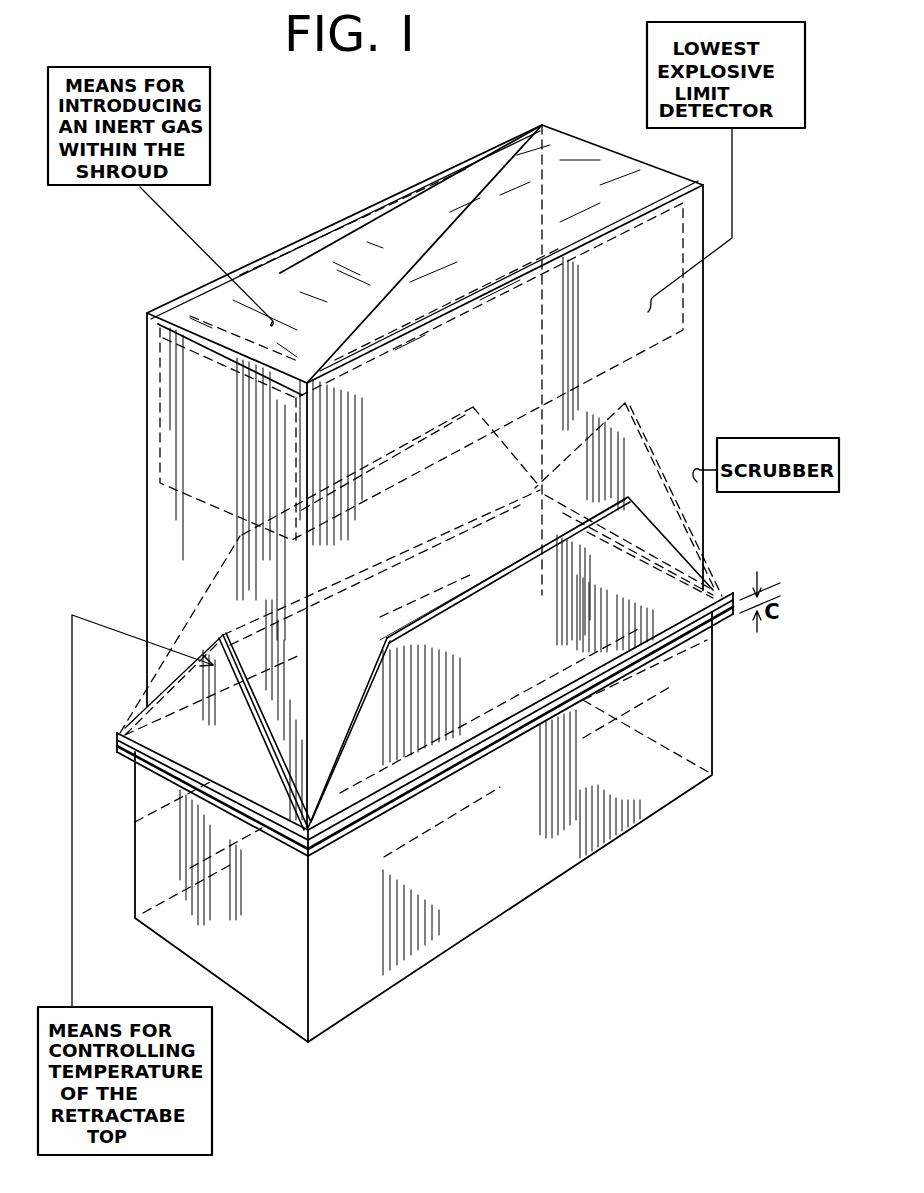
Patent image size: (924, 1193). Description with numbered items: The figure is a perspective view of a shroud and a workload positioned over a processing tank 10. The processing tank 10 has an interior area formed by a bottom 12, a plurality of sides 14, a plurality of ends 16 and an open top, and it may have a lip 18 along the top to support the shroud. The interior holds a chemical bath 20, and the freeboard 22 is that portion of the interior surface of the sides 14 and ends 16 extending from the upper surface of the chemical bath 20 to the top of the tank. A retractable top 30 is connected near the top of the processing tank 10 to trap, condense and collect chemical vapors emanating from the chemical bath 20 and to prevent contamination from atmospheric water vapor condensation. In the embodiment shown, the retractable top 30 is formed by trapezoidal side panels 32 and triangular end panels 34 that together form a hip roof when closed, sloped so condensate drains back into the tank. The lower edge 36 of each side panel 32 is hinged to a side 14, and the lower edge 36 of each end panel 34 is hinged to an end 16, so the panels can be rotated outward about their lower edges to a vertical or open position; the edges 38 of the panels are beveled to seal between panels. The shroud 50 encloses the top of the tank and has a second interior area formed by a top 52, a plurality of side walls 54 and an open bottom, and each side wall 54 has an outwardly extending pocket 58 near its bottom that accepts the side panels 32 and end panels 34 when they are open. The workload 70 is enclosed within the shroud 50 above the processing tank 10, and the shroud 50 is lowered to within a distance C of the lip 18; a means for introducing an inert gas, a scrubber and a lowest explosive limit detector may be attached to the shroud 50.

The processing tank 10 is at (177, 938).
The bottom 12 is at (460, 943).
The sides 14 is at (497, 878).
The ends 16 is at (152, 858).
The lip 18 is at (240, 822).
The chemical bath 20 is at (668, 690).
The freeboard 22 is at (708, 640).
The retractable top 30 is at (272, 672).
The side panels 32 is at (408, 560).
The end panels 34 is at (228, 720).
The lower edge 36 is at (162, 785).
The edges 38 is at (431, 535).
The shroud 50 is at (142, 445).
The top 52 is at (318, 284).
The side walls 54 is at (158, 536).
The pocket 58 is at (467, 662).
The workload 70 is at (155, 378).